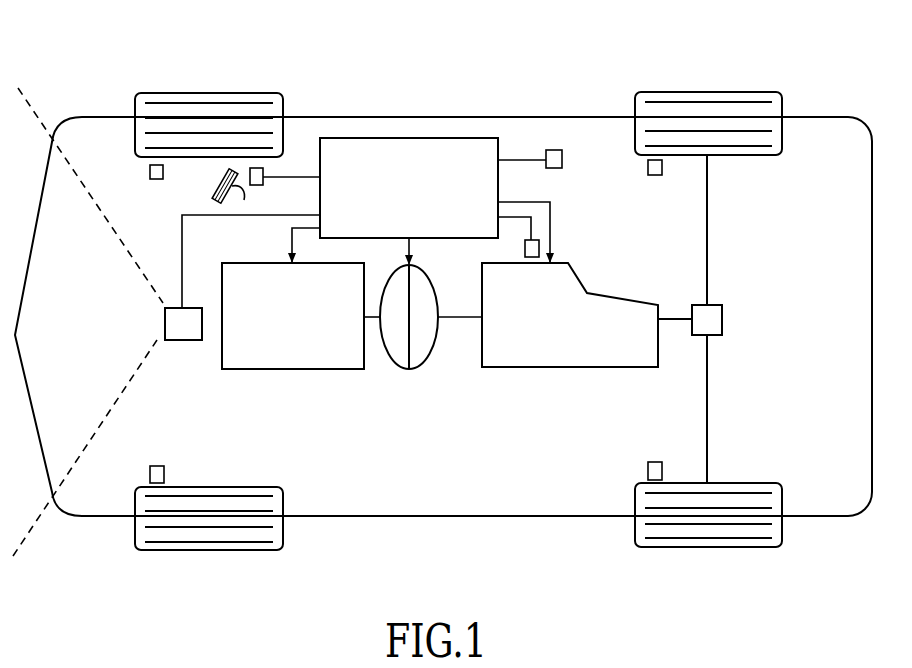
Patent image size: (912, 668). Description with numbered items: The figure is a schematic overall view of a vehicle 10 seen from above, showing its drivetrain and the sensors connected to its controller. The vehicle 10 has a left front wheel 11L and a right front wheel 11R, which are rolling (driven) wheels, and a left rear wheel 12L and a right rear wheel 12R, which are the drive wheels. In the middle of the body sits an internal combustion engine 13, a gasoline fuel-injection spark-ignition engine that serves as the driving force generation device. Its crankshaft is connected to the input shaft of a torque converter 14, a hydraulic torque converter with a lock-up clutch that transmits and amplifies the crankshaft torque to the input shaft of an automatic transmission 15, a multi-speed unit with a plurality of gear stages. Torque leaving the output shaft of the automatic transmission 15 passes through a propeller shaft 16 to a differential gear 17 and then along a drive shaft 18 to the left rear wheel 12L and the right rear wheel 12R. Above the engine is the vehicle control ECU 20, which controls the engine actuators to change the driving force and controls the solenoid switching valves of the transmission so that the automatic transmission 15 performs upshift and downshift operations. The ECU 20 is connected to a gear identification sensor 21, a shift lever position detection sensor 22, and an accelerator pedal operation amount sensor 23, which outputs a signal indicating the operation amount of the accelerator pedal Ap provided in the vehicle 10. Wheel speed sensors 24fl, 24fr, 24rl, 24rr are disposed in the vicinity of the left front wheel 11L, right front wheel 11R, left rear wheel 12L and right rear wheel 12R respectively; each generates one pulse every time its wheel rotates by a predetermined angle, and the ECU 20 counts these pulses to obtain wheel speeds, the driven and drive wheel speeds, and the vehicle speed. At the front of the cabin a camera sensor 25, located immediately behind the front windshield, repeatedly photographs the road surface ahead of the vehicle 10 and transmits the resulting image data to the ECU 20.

The vehicle 10 is at (540, 50).
The right front wheel 11R is at (205, 93).
The left front wheel 11L is at (200, 550).
The right rear wheel 12R is at (707, 92).
The left rear wheel 12L is at (708, 547).
The internal combustion engine 13 is at (287, 369).
The torque converter 14 is at (412, 369).
The automatic transmission 15 is at (553, 367).
The propeller shaft 16 is at (678, 319).
The differential gear 17 is at (722, 320).
The drive shaft 18 is at (707, 243).
The vehicle control ECU 20 is at (412, 138).
The gear identification sensor 21 is at (525, 248).
The shift lever position detection sensor 22 is at (553, 150).
The accelerator pedal operation amount sensor 23 is at (256, 185).
The accelerator pedal Ap is at (216, 193).
The wheel speed sensor 24fr is at (157, 179).
The wheel speed sensor 24fl is at (157, 466).
The wheel speed sensor 24rr is at (655, 175).
The wheel speed sensor 24rl is at (655, 462).
The camera sensor 25 is at (183, 340).